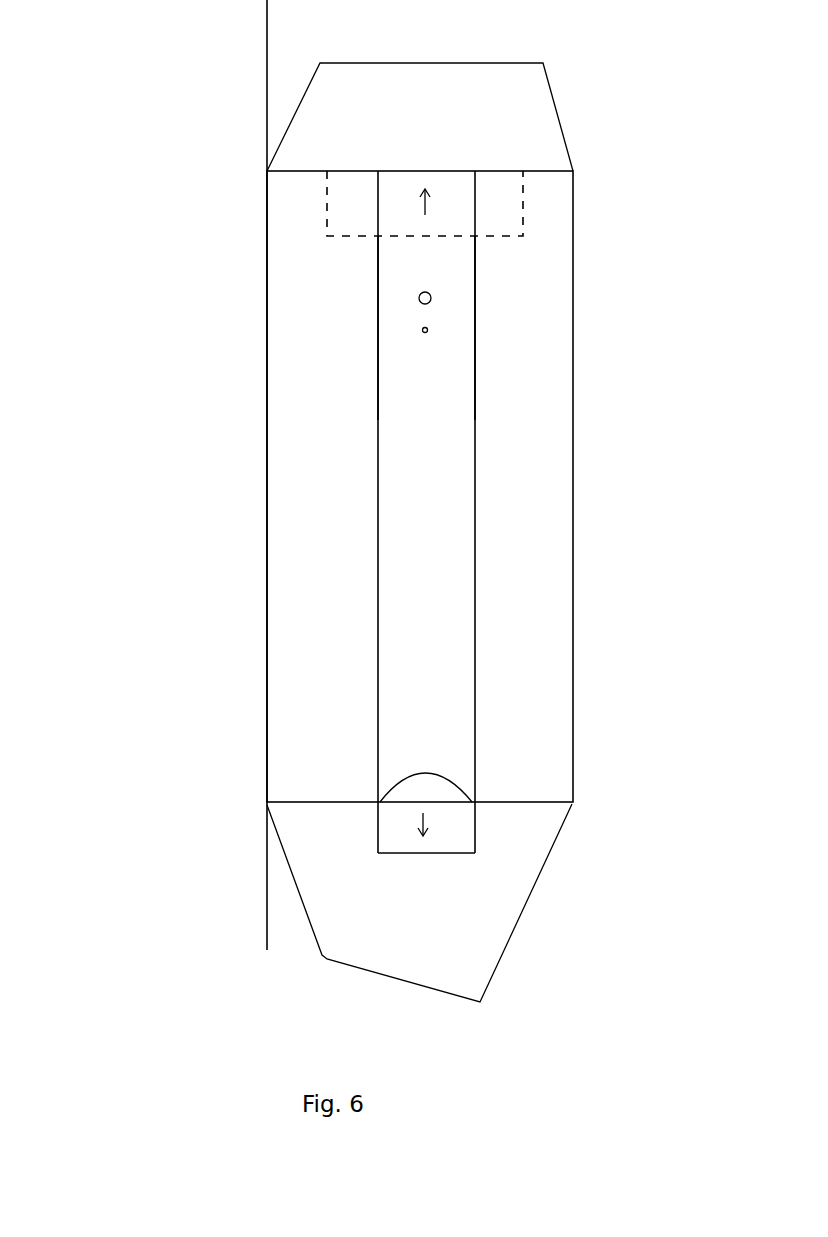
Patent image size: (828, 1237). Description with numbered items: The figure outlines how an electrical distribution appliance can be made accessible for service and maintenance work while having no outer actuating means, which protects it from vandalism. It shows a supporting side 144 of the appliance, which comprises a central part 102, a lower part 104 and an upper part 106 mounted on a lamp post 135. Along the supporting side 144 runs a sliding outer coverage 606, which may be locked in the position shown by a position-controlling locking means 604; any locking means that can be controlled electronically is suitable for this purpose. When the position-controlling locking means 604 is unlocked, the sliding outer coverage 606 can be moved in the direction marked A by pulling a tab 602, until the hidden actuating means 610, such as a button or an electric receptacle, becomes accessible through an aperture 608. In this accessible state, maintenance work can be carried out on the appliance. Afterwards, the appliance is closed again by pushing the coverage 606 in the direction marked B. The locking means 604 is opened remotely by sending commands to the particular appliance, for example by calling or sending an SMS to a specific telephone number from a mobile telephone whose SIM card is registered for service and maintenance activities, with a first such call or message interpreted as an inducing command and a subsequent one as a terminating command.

The lamp post 135 is at (203, 87).
The upper part 106 is at (478, 100).
The central part 102 is at (593, 556).
The supporting side 144 is at (512, 627).
The position-controlling locking means 604 is at (507, 204).
The direction B is at (398, 199).
The sliding outer coverage 606 is at (455, 262).
The aperture 608 is at (400, 298).
The hidden actuating means 610 is at (437, 331).
The tab 602 is at (453, 808).
The direction A is at (397, 822).
The lower part 104 is at (327, 898).